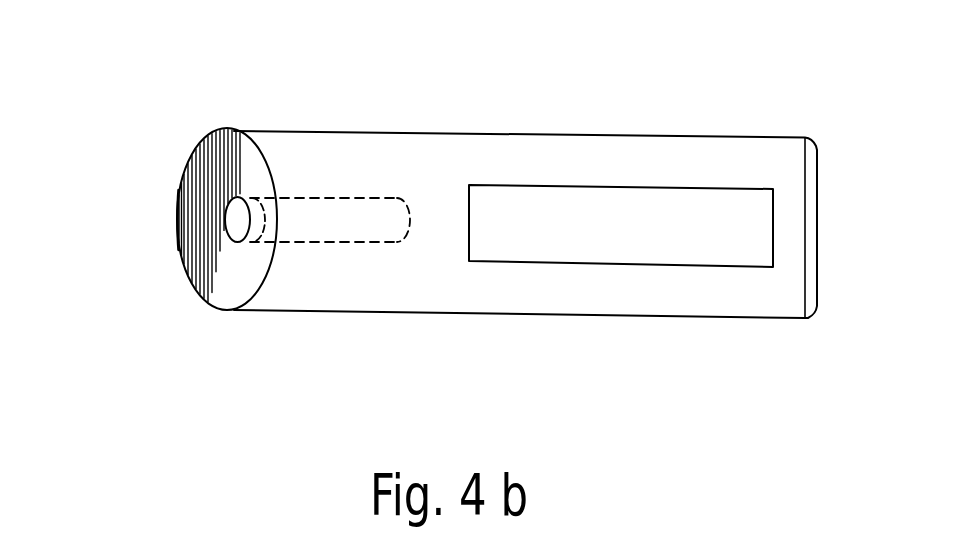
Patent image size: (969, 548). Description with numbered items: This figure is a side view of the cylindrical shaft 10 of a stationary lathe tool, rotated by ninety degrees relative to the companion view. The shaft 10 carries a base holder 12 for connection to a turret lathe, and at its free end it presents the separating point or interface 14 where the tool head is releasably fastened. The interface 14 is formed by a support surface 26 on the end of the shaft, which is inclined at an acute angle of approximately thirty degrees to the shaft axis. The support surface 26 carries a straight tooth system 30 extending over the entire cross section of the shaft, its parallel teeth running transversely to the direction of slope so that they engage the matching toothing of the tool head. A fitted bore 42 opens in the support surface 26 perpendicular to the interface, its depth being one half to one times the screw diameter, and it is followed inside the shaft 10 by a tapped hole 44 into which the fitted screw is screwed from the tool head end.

The cylindrical shaft 10 is at (408, 175).
The base holder 12 is at (718, 162).
The separating point or interface 14 is at (224, 143).
The support surface 26 is at (217, 260).
The straight tooth system 30 is at (183, 182).
The fitted bore 42 is at (237, 227).
The tapped hole 44 is at (307, 207).